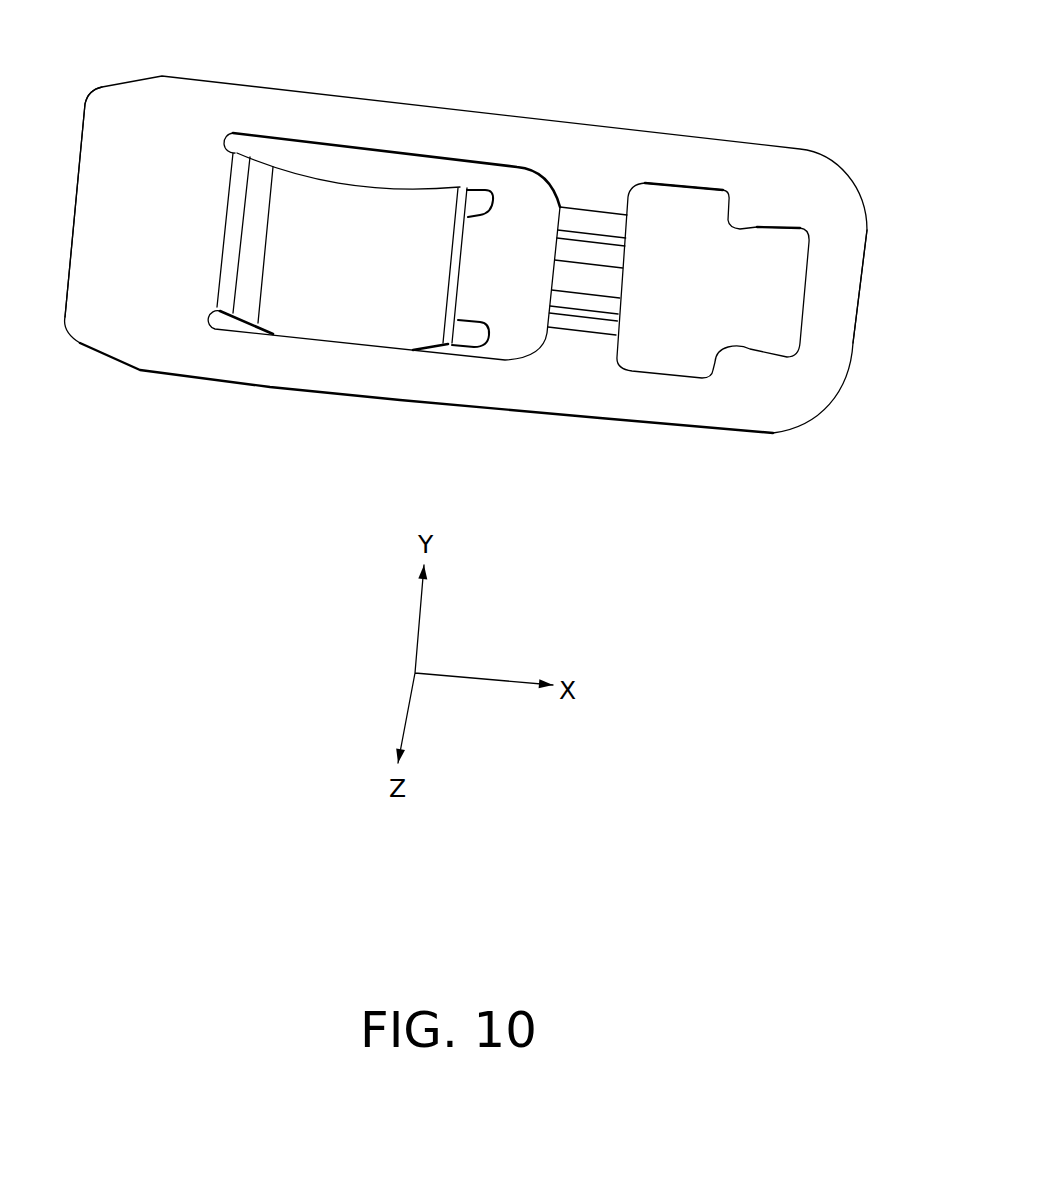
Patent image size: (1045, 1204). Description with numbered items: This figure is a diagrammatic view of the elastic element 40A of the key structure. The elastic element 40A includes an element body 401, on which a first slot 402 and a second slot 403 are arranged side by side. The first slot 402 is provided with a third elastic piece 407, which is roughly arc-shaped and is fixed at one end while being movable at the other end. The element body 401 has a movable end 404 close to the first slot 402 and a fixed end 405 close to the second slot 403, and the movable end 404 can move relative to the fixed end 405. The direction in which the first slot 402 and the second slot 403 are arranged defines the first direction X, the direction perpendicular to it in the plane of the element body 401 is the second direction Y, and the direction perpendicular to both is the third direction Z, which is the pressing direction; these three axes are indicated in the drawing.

The elastic element 40A is at (543, 50).
The element body 401 is at (528, 133).
The first slot 402 is at (532, 217).
The second slot 403 is at (735, 255).
The movable end 404 is at (148, 172).
The fixed end 405 is at (845, 315).
The third elastic piece 407 is at (382, 320).